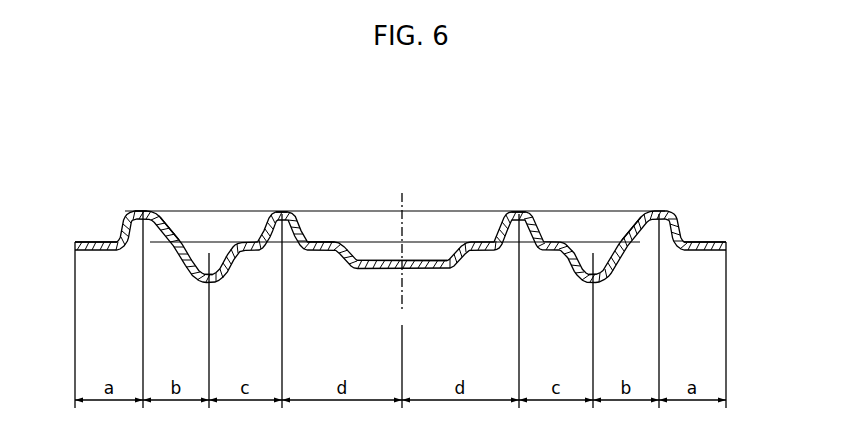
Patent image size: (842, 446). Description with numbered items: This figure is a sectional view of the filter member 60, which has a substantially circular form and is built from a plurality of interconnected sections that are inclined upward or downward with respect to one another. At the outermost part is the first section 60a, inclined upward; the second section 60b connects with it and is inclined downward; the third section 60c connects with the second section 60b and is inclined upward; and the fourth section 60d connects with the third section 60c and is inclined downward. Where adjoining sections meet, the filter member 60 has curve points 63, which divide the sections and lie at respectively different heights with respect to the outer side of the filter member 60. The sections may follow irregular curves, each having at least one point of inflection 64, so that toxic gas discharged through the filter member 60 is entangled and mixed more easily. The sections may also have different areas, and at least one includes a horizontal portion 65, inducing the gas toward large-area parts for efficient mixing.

The filter member 60 is at (103, 177).
The first section 60a is at (123, 236).
The second section 60b is at (176, 244).
The third section 60c is at (264, 236).
The fourth section 60d is at (368, 270).
The curve point 63 is at (143, 208).
The point of inflection 64 is at (194, 246).
The horizontal portion 65 is at (323, 241).